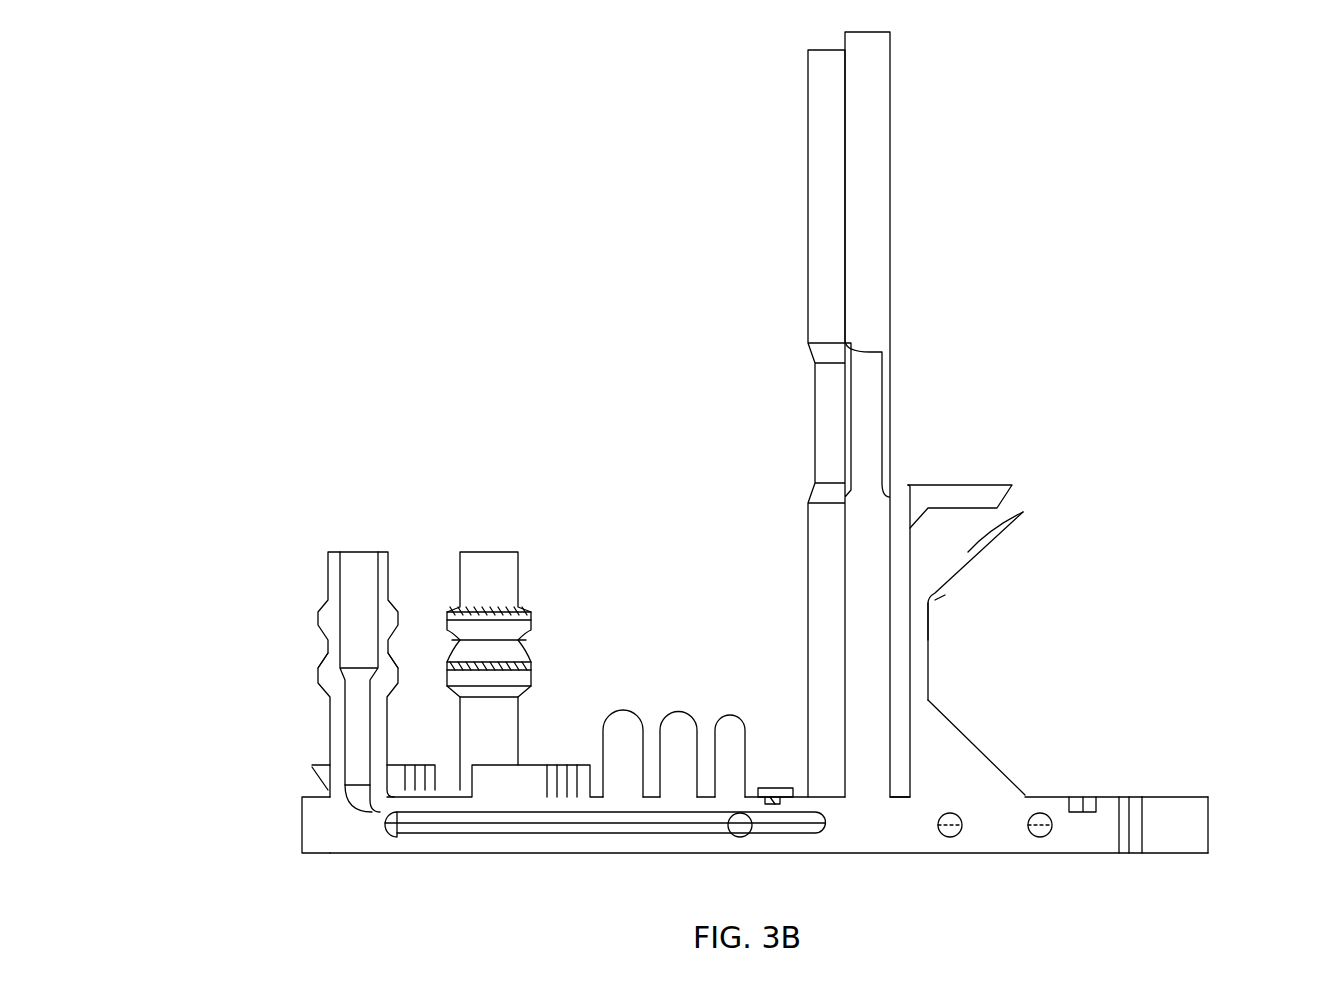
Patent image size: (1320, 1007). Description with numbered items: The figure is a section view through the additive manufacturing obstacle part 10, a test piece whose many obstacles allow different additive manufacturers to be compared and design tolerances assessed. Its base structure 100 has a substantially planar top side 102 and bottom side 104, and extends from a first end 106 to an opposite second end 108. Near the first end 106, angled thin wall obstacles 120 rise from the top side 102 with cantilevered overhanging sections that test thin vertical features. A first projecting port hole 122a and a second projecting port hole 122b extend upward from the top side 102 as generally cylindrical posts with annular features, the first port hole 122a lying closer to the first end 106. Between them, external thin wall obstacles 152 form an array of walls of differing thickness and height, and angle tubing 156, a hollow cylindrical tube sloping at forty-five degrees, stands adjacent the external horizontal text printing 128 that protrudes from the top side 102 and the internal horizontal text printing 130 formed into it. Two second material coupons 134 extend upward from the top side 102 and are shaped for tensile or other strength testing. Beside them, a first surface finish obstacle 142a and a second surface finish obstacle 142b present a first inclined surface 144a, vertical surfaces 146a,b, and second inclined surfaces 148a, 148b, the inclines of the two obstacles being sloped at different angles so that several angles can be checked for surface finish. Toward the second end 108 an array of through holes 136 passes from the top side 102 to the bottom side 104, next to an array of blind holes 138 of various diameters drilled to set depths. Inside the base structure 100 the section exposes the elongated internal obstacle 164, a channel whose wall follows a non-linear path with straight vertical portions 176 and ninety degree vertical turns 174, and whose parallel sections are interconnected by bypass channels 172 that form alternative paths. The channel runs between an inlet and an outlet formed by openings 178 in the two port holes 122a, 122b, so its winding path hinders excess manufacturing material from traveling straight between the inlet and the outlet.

The additive manufacturing obstacle part 10 is at (600, 322).
The base structure 100 is at (325, 822).
The top side 102 is at (1155, 797).
The bottom side 104 is at (950, 853).
The first end 106 is at (302, 845).
The second end 108 is at (1208, 830).
The angled thin wall obstacles 120 is at (325, 785).
The first projecting port hole 122a is at (330, 590).
The second projecting port hole 122b is at (462, 552).
The external horizontal text printing 128 is at (780, 790).
The internal horizontal text printing 130 is at (772, 800).
The second material coupons 134 is at (865, 137).
The array of through holes 136 is at (1130, 853).
The array of blind holes 138 is at (1082, 812).
The first surface finish obstacle 142a is at (1023, 512).
The second surface finish obstacle 142b is at (950, 490).
The first inclined surface 144a is at (975, 745).
The vertical surfaces 146a,b is at (928, 672).
The second inclined surface 148a is at (998, 537).
The second inclined surface 148b is at (940, 603).
The external thin wall obstacles 152 is at (530, 775).
The angle tubing 156 is at (615, 715).
The elongated internal obstacle 164 is at (620, 828).
The bypass channels 172 is at (718, 808).
The ninety degree vertical turns 174 is at (372, 812).
The straight vertical portions 176 is at (330, 655).
The openings 178 is at (365, 550).